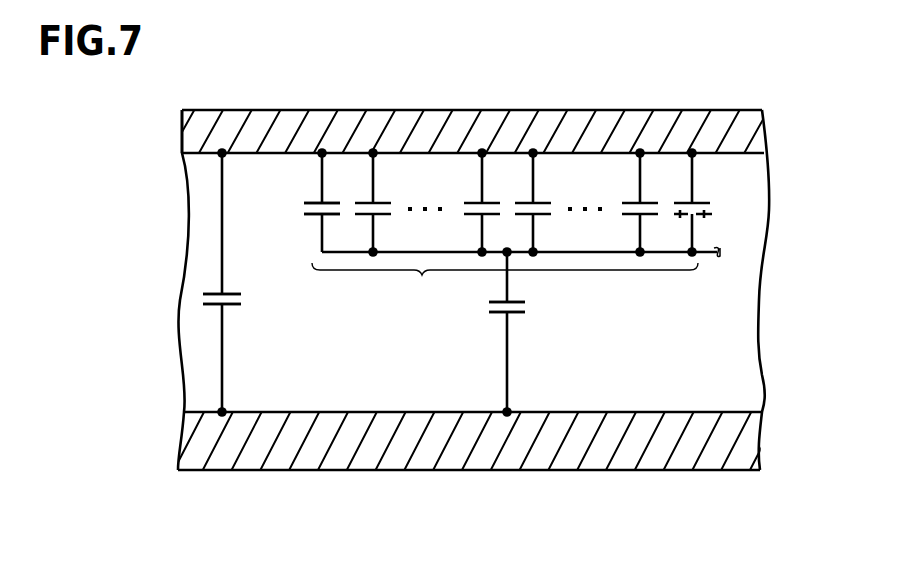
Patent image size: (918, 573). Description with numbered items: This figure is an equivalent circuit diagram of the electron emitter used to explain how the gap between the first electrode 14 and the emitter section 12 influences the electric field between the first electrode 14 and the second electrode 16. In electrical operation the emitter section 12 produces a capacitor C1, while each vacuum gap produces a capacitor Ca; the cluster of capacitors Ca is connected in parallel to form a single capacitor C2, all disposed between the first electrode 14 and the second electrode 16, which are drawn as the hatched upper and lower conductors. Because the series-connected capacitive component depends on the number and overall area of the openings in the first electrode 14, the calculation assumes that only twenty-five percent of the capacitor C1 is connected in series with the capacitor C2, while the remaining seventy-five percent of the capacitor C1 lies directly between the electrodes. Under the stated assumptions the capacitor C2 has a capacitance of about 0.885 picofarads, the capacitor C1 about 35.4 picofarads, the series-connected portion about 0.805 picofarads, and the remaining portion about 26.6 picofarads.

The emitter section 12 is at (747, 278).
The first electrode 14 is at (287, 117).
The second electrode 16 is at (738, 447).
The capacitor due to gap Ca is at (305, 205).
The capacitor comprising the cluster of capacitors Ca C2 is at (505, 283).
The capacitor due to emitter section C1 is at (245, 299).